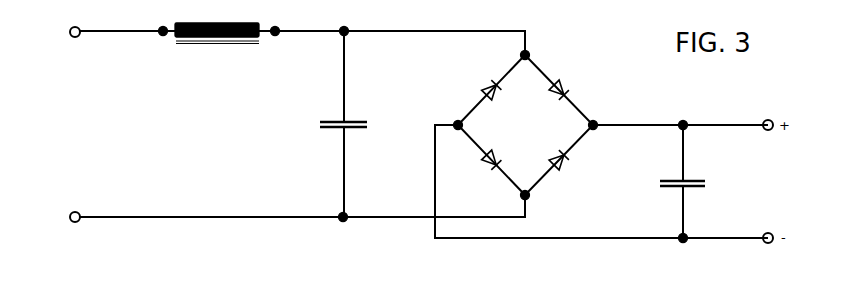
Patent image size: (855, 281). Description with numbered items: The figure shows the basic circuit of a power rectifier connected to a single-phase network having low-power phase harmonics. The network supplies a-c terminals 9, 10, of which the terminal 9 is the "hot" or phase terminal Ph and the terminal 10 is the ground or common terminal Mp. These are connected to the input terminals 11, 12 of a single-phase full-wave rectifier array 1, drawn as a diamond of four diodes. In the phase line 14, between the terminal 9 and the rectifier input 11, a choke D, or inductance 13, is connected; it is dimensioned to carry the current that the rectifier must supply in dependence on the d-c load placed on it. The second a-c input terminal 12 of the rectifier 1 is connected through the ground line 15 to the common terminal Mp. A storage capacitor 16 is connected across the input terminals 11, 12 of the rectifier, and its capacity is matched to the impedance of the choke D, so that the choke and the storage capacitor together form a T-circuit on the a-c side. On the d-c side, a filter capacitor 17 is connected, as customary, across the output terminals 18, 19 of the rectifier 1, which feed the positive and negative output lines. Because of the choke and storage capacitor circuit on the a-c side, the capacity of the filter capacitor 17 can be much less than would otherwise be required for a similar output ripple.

The rectifier array 1 is at (580, 76).
The a-c terminal 9 is at (72, 27).
The a-c terminal 10 is at (76, 222).
The input terminal 11 is at (528, 53).
The input terminal 12 is at (528, 197).
The inductance 13 is at (222, 23).
The line 14 is at (300, 30).
The ground line 15 is at (236, 218).
The storage capacitor 16 is at (352, 128).
The filter capacitor 17 is at (692, 180).
The output terminal 18 is at (595, 119).
The output terminal 19 is at (456, 121).